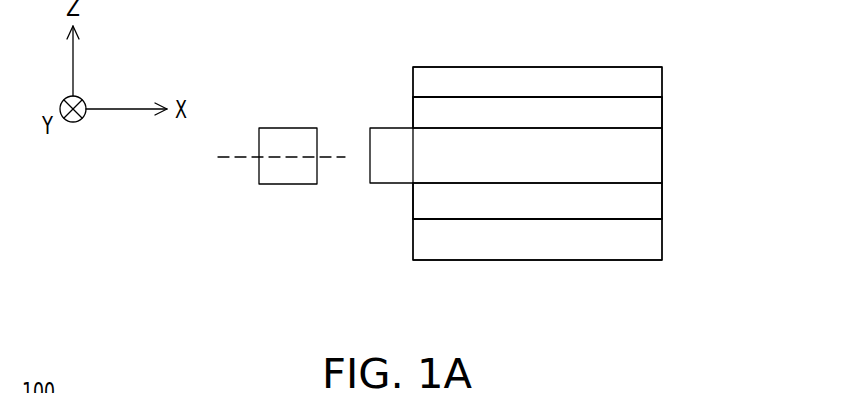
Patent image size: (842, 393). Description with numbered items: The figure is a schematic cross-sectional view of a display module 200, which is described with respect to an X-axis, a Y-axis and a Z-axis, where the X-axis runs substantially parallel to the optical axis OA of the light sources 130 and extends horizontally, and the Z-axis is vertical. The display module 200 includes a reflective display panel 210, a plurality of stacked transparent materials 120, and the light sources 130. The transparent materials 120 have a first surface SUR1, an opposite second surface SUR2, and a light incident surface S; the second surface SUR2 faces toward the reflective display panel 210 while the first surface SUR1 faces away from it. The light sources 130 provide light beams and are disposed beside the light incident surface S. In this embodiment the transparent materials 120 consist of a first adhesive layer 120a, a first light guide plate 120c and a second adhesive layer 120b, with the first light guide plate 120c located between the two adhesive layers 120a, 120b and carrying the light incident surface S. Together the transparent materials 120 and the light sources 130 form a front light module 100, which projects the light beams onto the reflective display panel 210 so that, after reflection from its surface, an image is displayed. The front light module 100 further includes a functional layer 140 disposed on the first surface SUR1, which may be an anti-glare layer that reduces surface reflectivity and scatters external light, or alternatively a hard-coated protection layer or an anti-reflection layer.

The front light module 100 is at (355, 83).
The light sources 130 is at (286, 176).
The optical axis OA is at (265, 159).
The light incident surface S is at (367, 161).
The display module 200 is at (733, 313).
The functional layer 140 is at (630, 81).
The first surface SUR1 is at (637, 96).
The transparent materials 120 is at (537, 158).
The first adhesive layer 120a is at (652, 114).
The first light guide plate 120c is at (652, 152).
The second adhesive layer 120b is at (652, 198).
The second surface SUR2 is at (623, 222).
The reflective display panel 210 is at (427, 241).